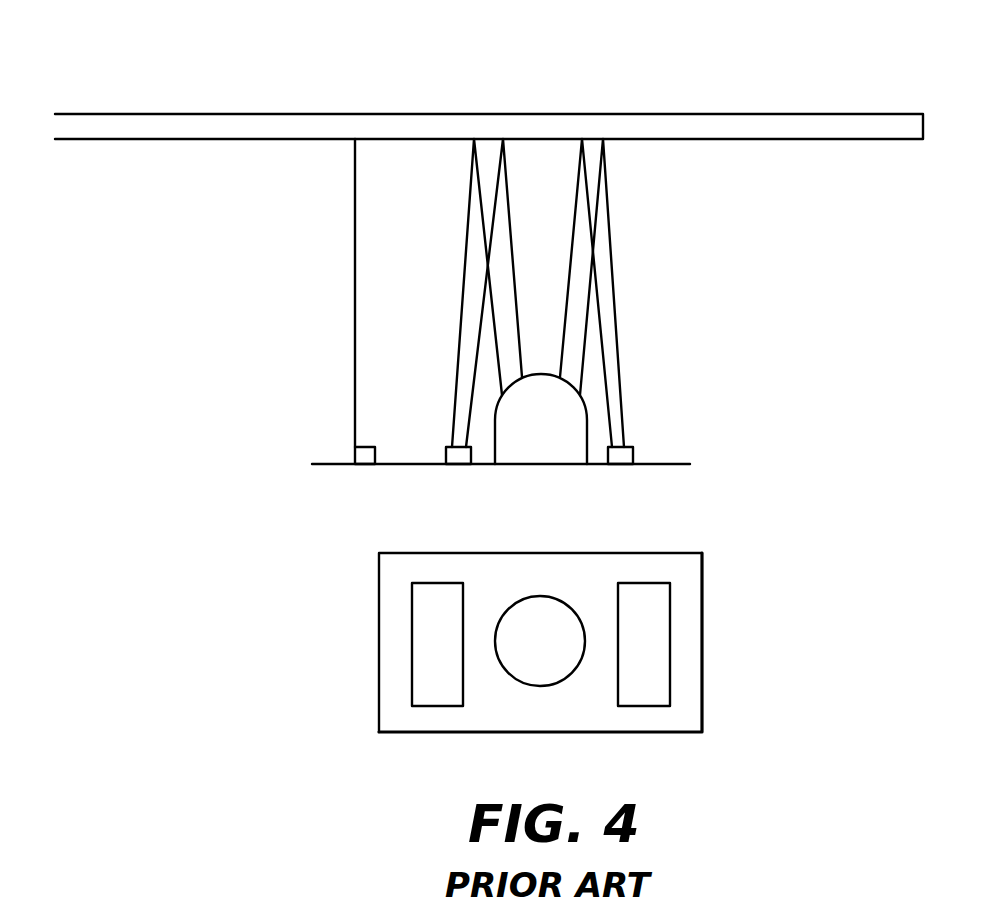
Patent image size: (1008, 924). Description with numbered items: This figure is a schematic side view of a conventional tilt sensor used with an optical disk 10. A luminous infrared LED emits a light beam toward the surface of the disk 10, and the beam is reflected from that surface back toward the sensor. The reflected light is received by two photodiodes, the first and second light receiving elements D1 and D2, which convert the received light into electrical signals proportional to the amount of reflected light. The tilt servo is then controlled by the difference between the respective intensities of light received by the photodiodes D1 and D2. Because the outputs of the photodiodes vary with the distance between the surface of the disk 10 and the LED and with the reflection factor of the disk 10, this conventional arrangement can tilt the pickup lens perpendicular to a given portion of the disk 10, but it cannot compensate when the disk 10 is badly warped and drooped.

The disk 10 is at (690, 115).
The luminous infrared LED is at (542, 630).
The first light receiving element D1 is at (455, 464).
The second light receiving element D2 is at (622, 464).